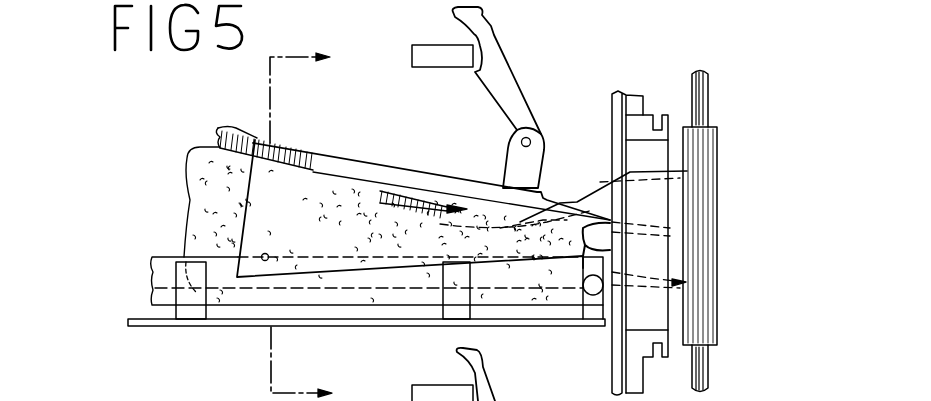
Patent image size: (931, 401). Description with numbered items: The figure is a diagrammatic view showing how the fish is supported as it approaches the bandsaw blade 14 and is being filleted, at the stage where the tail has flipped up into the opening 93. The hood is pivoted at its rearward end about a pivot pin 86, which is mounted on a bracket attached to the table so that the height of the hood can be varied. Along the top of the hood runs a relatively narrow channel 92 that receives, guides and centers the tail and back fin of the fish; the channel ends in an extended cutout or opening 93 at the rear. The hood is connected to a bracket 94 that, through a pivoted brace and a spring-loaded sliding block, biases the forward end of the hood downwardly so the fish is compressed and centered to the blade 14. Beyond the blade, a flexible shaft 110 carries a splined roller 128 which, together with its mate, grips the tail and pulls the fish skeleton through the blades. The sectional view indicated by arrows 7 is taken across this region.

The section line 7- 7 is at (301, 214).
The bandsaw blade 14 is at (627, 103).
The pivot pin 86 is at (263, 260).
The channel 92 is at (410, 172).
The opening 93 is at (560, 203).
The bracket 94 is at (522, 163).
The shaft 110 is at (710, 108).
The splined roller 128 is at (718, 235).